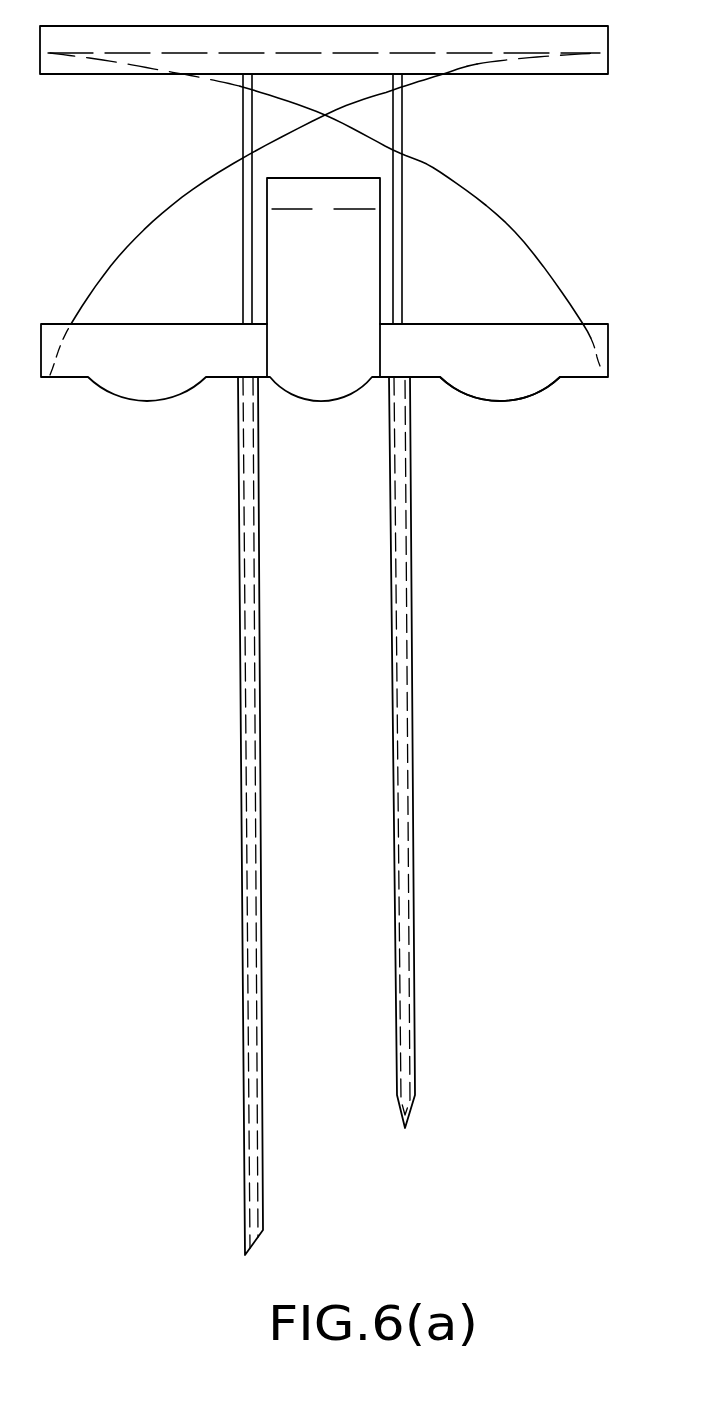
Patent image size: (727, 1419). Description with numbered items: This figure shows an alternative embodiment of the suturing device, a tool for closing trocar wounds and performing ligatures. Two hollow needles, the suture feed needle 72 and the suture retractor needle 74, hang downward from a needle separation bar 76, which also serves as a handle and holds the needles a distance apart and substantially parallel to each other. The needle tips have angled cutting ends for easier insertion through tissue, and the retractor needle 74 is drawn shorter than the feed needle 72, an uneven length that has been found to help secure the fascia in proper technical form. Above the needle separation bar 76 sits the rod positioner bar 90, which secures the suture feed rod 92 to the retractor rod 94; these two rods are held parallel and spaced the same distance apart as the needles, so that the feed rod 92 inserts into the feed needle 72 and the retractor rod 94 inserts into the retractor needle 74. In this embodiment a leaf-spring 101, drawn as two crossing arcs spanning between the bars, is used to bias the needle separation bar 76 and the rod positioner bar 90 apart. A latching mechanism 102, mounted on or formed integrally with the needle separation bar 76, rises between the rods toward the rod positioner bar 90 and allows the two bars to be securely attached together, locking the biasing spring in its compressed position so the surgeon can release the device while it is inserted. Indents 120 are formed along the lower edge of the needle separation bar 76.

The rod positioner bar 90 is at (628, 38).
The suture feed rod 92 is at (242, 113).
The retractor rod 94 is at (402, 118).
The leaf-spring 101 is at (127, 247).
The latching mechanism 102 is at (301, 170).
The needle separation bar 76 is at (608, 343).
The indents 120 is at (493, 354).
The suture feed needle 72 is at (245, 1157).
The suture retractor needle 74 is at (415, 893).